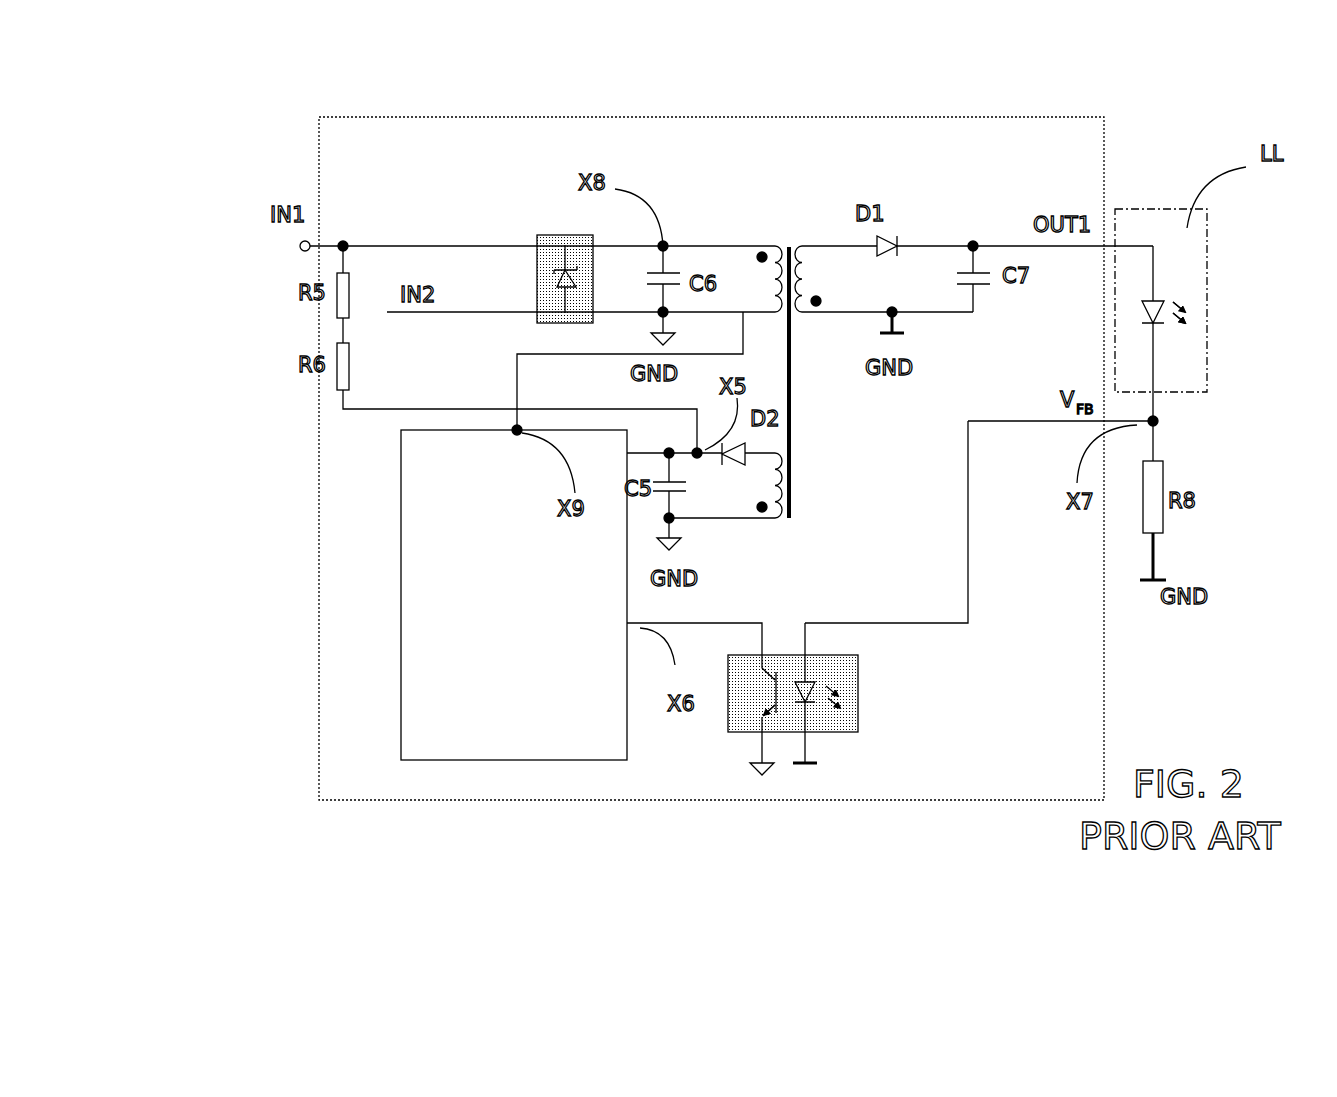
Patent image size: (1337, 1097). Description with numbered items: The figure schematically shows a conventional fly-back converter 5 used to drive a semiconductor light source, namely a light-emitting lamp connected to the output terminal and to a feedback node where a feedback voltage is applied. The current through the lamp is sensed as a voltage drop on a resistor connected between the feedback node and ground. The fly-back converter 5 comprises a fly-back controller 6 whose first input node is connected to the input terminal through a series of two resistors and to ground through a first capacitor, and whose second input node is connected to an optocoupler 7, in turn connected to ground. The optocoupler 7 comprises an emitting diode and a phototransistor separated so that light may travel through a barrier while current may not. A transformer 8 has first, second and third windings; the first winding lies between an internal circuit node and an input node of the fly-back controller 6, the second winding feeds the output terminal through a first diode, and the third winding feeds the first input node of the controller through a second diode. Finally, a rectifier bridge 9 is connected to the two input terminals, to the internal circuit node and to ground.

The fly-back converter 5 is at (340, 147).
The fly-back controller 6 is at (443, 617).
The optocoupler 7 is at (852, 698).
The transformer 8 is at (778, 228).
The rectifier bridge 9 is at (573, 248).